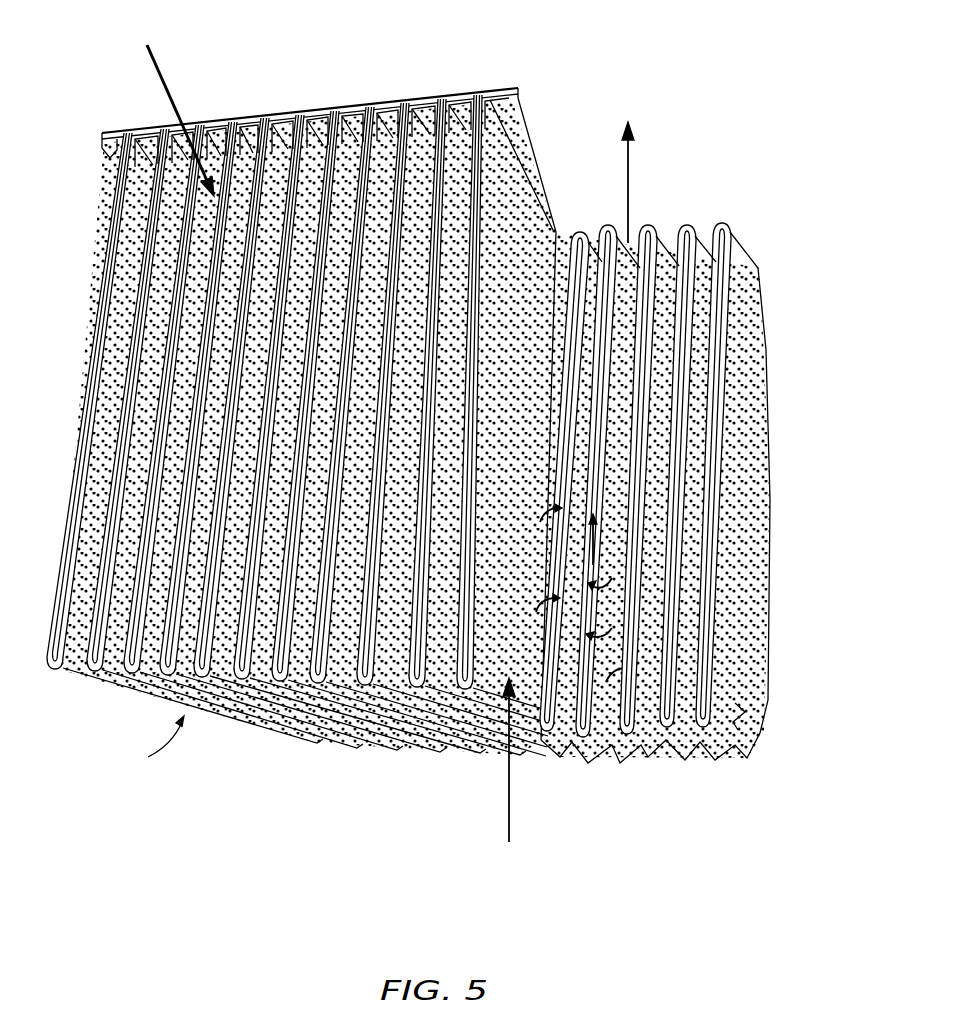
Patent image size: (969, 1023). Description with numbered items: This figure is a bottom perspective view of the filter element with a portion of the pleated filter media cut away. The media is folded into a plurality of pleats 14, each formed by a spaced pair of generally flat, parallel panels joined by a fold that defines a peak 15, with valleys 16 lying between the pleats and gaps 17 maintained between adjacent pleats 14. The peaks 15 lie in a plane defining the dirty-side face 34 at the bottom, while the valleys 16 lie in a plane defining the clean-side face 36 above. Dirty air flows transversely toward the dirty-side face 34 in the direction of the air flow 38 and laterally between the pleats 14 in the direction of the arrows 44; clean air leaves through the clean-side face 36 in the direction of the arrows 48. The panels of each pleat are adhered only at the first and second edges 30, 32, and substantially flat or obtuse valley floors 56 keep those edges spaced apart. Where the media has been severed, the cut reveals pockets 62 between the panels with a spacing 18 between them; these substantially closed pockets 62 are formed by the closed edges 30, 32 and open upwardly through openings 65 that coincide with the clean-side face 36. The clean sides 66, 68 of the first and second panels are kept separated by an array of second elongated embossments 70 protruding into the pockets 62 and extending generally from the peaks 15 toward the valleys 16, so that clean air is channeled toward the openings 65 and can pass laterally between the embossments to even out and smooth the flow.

The pleats 14 is at (125, 690).
The peaks 15 is at (715, 762).
The valleys 16 is at (318, 127).
The spaces (gaps) between pleats 17 is at (463, 147).
The spacing (gap) between panels 18 is at (675, 370).
The first edge 30 is at (255, 128).
The second edge 32 is at (473, 463).
The dirty-side face 34 is at (147, 745).
The clean-side face 36 is at (357, 95).
The air flow (arrows) 38 is at (505, 792).
The arrows (lateral dirty air flow direction) 44 is at (152, 56).
The arrows (clean air flow direction) 48 is at (635, 243).
The valley floors 56 is at (427, 112).
The pockets 62 is at (558, 582).
The openings 65 is at (620, 235).
The clean side of first panel 66 is at (722, 223).
The clean side of second panel 68 is at (712, 645).
The second elongated embossments 70 is at (712, 440).